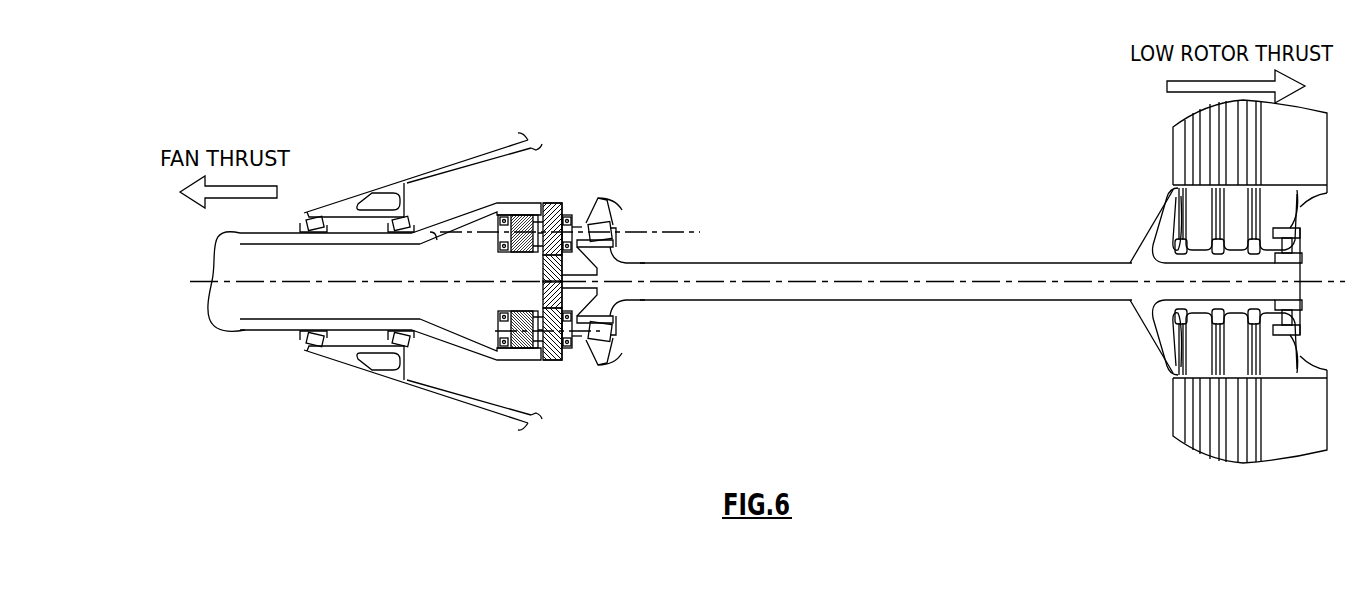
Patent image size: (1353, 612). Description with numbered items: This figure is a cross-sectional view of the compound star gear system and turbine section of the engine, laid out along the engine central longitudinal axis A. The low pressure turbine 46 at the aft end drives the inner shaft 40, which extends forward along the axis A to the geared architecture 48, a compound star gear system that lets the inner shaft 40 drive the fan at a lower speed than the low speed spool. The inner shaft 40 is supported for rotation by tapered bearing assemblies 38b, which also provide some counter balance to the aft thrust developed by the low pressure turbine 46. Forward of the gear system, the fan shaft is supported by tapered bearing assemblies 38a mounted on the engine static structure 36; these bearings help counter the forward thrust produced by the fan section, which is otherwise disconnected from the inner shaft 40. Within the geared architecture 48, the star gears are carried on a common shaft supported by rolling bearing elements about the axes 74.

The engine static structure 36 is at (432, 172).
The bearing assemblies 38a is at (393, 332).
The tapered bearing assemblies 38b is at (613, 330).
The inner shaft 40 is at (905, 263).
The low pressure turbine section 46 is at (1162, 434).
The geared architecture 48 is at (583, 188).
The axes 74 is at (444, 230).
The engine central longitudinal axis A is at (778, 282).